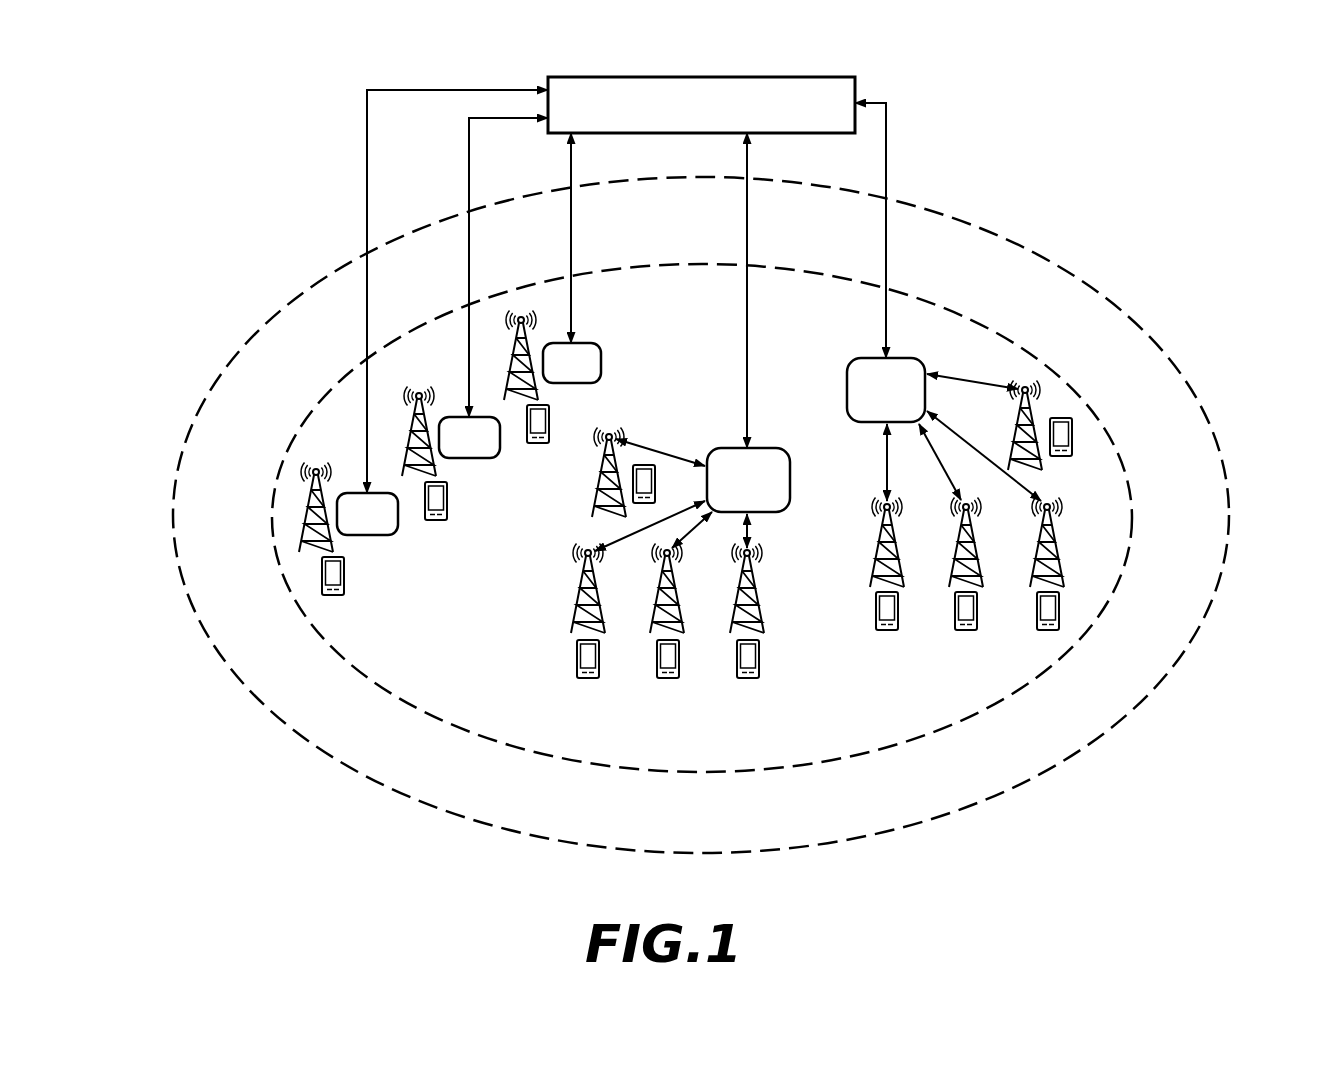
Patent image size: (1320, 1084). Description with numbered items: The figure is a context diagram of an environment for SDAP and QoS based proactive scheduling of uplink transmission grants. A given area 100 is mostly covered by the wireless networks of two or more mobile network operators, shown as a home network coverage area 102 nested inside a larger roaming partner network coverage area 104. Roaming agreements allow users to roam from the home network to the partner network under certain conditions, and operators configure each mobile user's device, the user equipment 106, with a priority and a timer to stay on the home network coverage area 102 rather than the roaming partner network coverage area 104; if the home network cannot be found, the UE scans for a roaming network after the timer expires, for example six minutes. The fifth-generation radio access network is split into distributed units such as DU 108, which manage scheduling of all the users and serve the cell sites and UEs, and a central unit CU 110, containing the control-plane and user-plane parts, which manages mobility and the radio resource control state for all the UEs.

The given area 100 is at (1100, 210).
The home network coverage area 102 is at (855, 726).
The roaming partner network coverage area 104 is at (869, 811).
The user equipment 106 is at (344, 575).
The distributed unit 108 is at (378, 535).
The central unit 110 is at (797, 77).